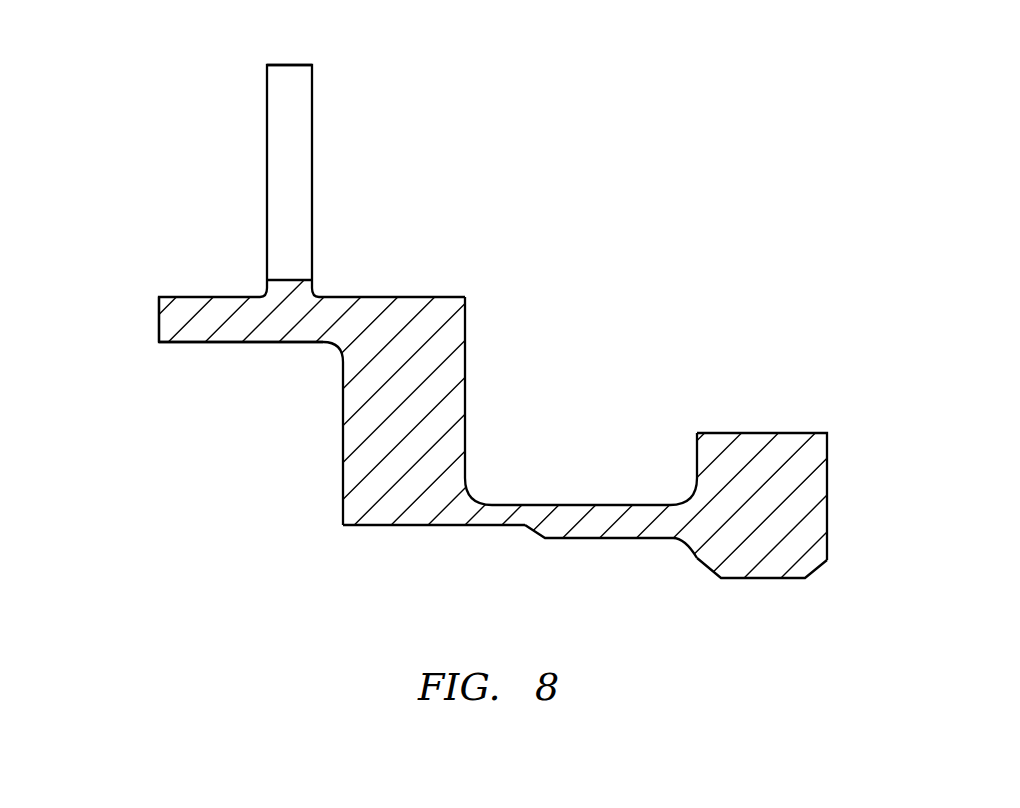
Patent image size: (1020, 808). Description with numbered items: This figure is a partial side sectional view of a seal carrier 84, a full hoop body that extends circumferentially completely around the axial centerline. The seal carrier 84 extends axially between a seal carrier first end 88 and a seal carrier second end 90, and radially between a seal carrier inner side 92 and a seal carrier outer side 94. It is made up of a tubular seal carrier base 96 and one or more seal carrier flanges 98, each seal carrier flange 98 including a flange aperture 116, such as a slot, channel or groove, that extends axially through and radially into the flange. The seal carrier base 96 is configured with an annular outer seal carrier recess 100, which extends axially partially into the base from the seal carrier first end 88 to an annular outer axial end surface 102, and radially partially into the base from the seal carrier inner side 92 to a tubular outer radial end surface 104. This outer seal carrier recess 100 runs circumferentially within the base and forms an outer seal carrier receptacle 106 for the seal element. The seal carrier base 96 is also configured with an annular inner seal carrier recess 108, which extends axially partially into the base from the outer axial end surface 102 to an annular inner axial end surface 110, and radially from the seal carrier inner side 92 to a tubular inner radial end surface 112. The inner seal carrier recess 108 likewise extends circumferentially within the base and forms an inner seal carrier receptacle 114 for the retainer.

The seal carrier 84 is at (603, 218).
The seal carrier first end 88 is at (158, 319).
The seal carrier second end 90 is at (827, 477).
The seal carrier inner side 92 is at (753, 578).
The seal carrier outer side 94 is at (299, 65).
The seal carrier base 96 is at (682, 311).
The seal carrier flange 98 is at (338, 124).
The outer seal carrier recess 100 is at (106, 442).
The outer axial end surface 102 is at (343, 435).
The outer radial end surface 104 is at (217, 342).
The outer seal carrier receptacle 106 is at (133, 482).
The inner seal carrier recess 108 is at (509, 536).
The inner axial end surface 110 is at (533, 534).
The inner radial end surface 112 is at (379, 525).
The inner seal carrier receptacle 114 is at (465, 545).
The flange aperture 116 is at (300, 177).